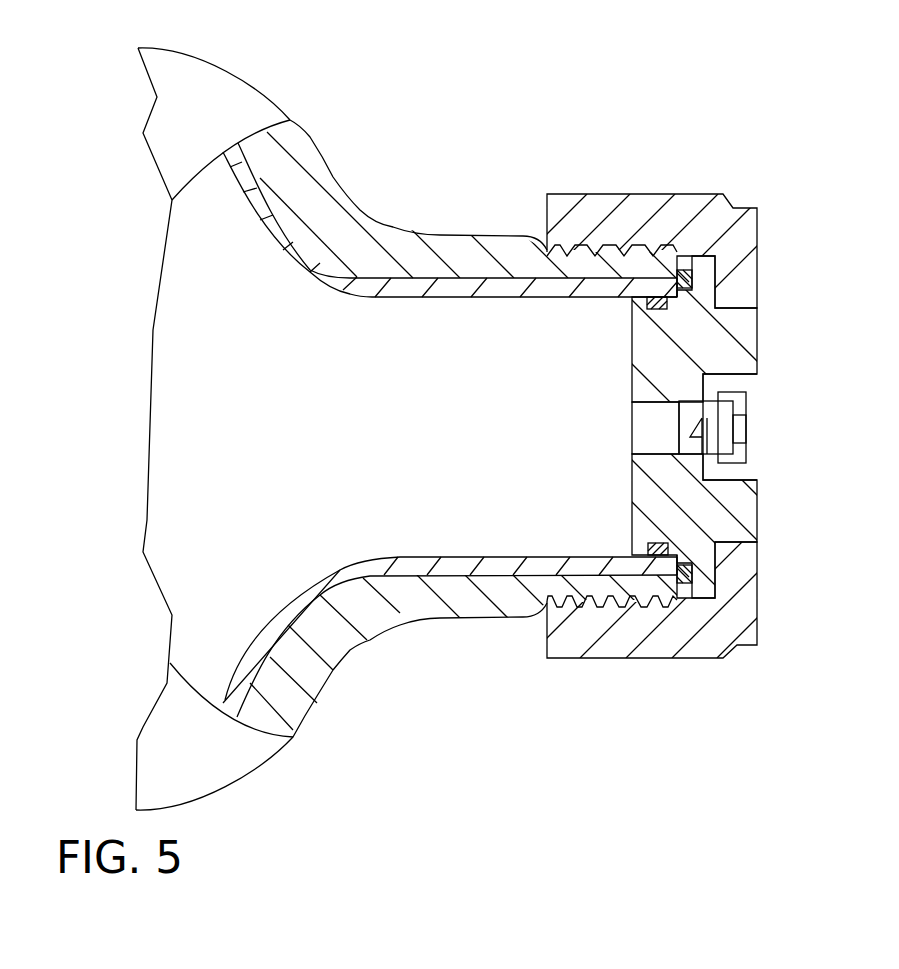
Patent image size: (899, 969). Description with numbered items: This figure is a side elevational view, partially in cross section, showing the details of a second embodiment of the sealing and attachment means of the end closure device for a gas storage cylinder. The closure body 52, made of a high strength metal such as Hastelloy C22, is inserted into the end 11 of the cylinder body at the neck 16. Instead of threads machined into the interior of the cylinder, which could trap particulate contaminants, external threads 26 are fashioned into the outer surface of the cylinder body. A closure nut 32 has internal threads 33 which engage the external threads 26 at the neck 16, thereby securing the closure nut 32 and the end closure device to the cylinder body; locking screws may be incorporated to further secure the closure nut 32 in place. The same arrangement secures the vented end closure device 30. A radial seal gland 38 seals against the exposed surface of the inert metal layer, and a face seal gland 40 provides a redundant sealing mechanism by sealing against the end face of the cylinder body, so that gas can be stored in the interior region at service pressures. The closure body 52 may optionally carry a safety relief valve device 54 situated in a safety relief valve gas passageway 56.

The end 11 is at (437, 205).
The neck 16 is at (400, 623).
The external threads 26 is at (602, 278).
The vented end closure device 30 is at (767, 183).
The closure nut 32 is at (643, 194).
The threads 33 is at (602, 250).
The radial seal gland 38 is at (660, 310).
The face seal gland 40 is at (716, 280).
The closure body 52 is at (758, 348).
The safety relief valve device 54 is at (772, 422).
The safety relief valve gas passageway 56 is at (669, 442).